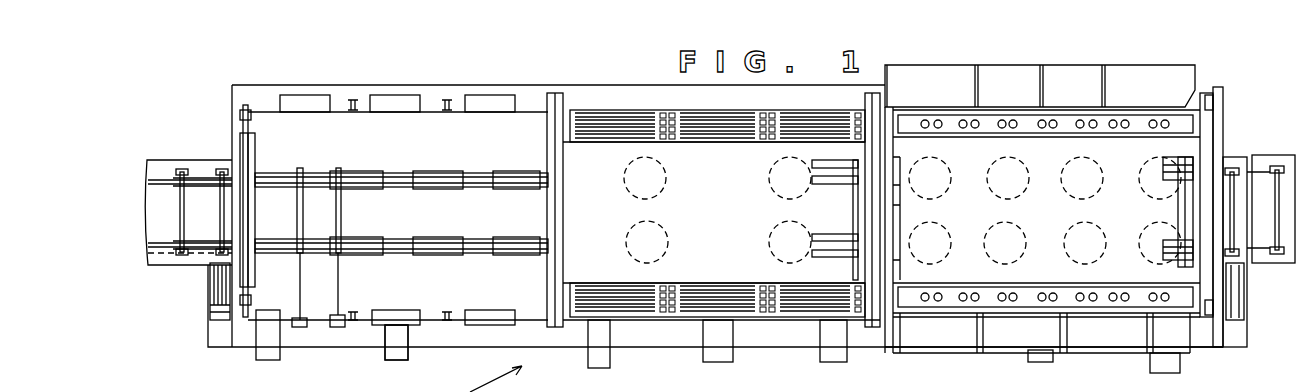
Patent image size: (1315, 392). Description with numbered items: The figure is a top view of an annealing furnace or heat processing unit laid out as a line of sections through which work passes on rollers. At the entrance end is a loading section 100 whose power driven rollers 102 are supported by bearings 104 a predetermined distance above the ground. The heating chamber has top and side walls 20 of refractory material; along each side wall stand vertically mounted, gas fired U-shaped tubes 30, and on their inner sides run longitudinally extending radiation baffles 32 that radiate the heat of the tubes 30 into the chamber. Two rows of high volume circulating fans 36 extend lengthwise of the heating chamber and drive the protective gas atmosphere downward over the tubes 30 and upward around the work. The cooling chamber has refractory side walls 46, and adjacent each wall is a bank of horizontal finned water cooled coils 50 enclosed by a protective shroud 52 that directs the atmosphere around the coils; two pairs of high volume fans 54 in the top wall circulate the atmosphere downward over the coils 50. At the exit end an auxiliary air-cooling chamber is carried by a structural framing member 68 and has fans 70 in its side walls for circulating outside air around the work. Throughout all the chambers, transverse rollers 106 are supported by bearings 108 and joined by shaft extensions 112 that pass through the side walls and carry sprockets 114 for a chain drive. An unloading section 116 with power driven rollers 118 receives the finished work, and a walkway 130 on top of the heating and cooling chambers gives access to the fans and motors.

The top and side walls 20 is at (920, 105).
The U-shaped tubes 30 is at (1045, 211).
The radiation baffles 32 is at (962, 135).
The high volume circulating fans 36 is at (1015, 198).
The side walls 46 is at (603, 108).
The water cooled coils 50 is at (714, 224).
The protective shroud 52 is at (614, 142).
The high volume fans 54 is at (668, 244).
The structural framing member 68 is at (352, 98).
The fans 70 is at (392, 330).
The loading section 100 is at (1282, 306).
The power driven rollers 102 is at (1262, 195).
The bearings 104 is at (1278, 260).
The rollers 106 is at (340, 210).
The bearings 108 is at (850, 178).
The shaft extensions 112 is at (342, 328).
The sprockets 114 is at (306, 332).
The unloading section 116 is at (163, 290).
The power driven rollers 118 is at (180, 199).
The walkway 130 is at (930, 340).